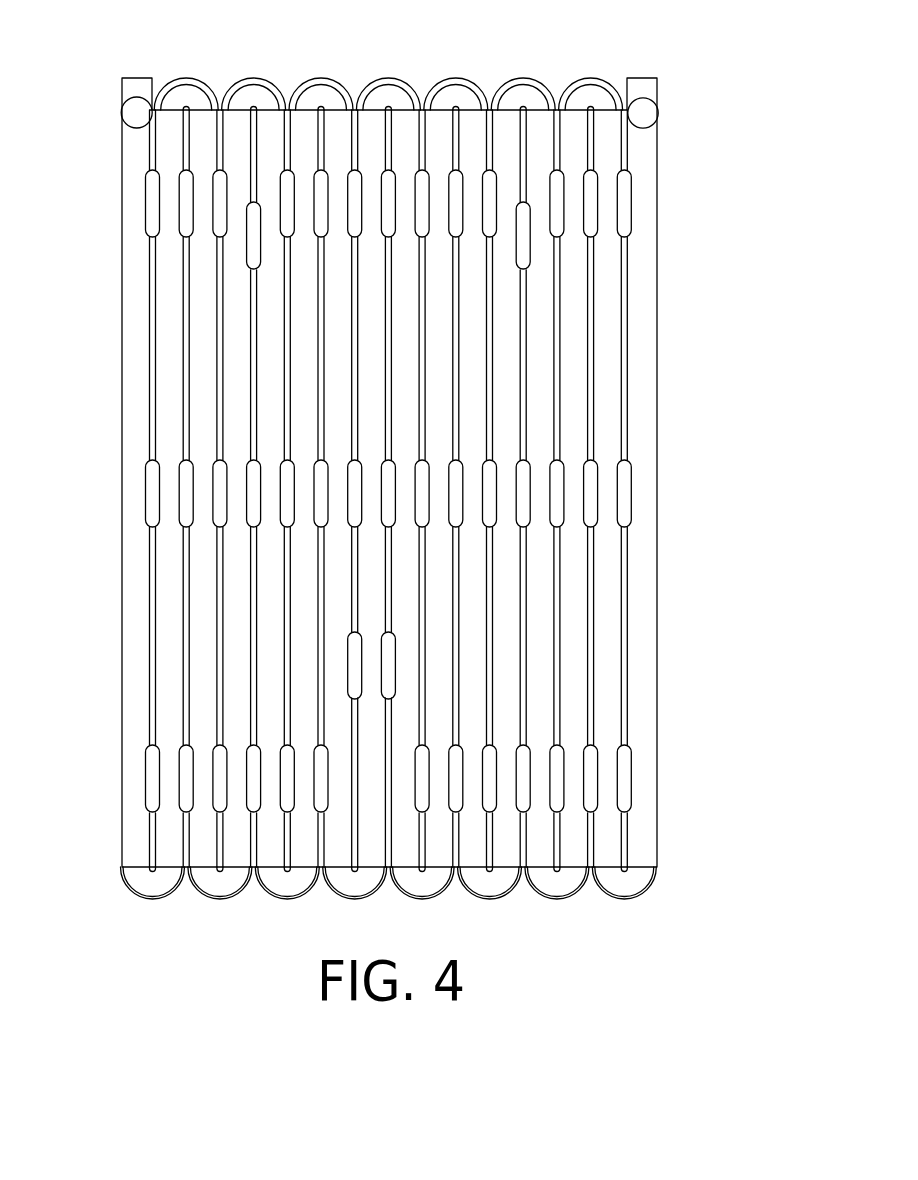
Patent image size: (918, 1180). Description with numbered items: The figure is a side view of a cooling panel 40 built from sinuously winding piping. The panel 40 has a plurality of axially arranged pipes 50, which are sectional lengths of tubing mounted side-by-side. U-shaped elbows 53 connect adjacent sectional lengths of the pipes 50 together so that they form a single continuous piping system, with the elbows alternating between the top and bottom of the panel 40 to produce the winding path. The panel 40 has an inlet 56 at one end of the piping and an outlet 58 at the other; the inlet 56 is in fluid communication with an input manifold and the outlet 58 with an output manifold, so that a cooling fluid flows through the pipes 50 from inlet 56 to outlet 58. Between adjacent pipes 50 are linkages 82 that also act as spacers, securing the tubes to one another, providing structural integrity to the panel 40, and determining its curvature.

The panel 40 is at (435, 460).
The pipes 50 is at (607, 340).
The U-shaped elbows 53 is at (454, 90).
The inlet 56 is at (648, 113).
The outlet 58 is at (130, 113).
The linkages 82 is at (625, 200).